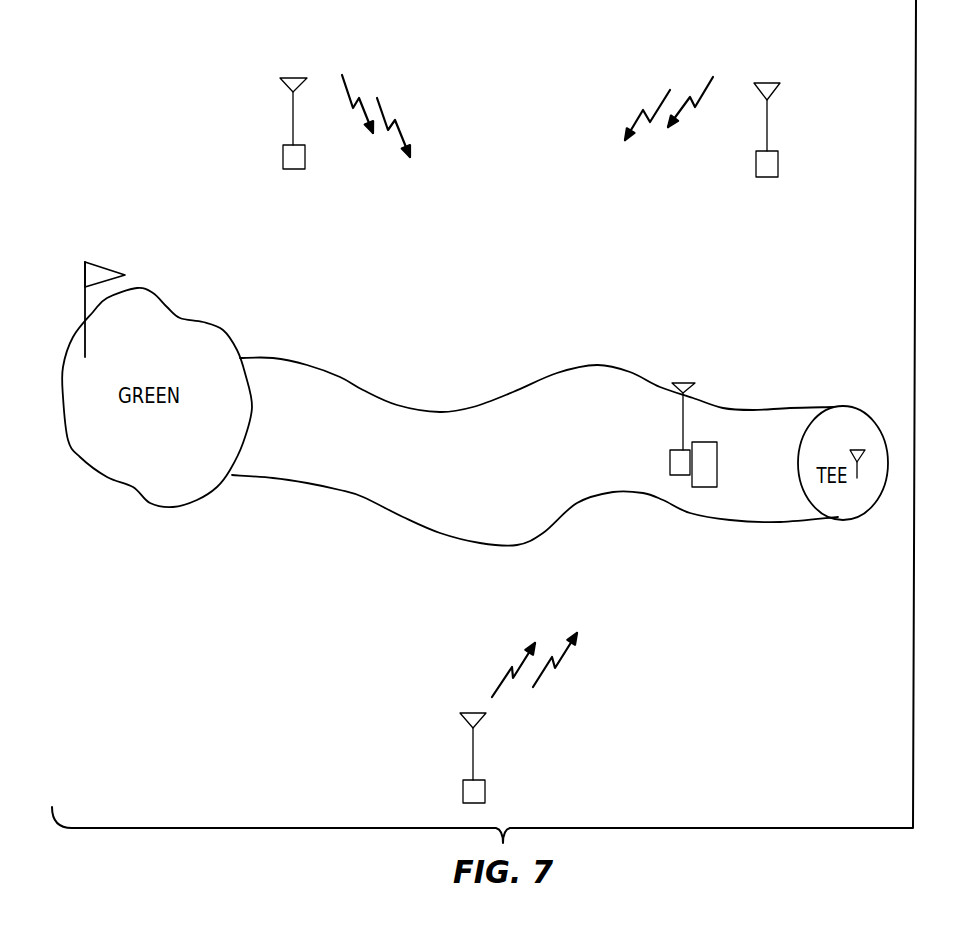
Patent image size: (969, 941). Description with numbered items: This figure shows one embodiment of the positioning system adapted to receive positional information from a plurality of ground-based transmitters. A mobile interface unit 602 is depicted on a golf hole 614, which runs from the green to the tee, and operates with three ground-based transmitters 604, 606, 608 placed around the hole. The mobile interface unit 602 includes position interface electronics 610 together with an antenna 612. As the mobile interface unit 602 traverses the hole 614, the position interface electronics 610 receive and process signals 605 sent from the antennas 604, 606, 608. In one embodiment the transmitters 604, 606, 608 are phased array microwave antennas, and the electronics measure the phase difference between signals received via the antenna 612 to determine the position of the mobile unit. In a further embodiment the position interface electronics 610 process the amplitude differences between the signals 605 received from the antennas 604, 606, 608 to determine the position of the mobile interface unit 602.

The mobile interface unit 602 is at (707, 447).
The ground-based transmitter 604 is at (287, 77).
The signals 605 is at (420, 118).
The ground-based transmitter 606 is at (768, 82).
The ground-based transmitter 608 is at (462, 727).
The position interface electronics 610 is at (680, 467).
The antenna 612 is at (664, 426).
The hole 614 is at (409, 378).